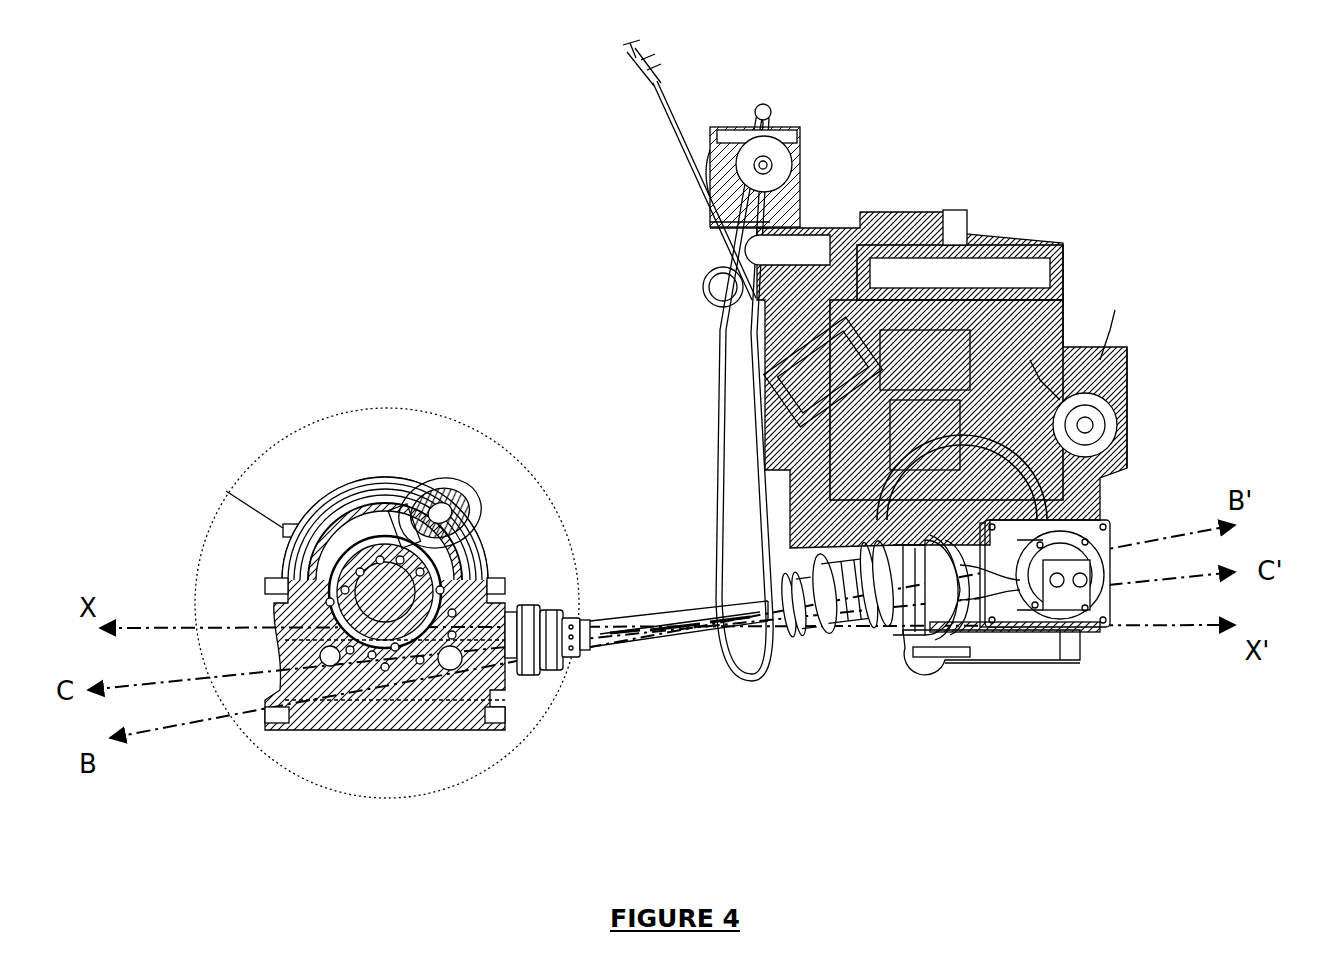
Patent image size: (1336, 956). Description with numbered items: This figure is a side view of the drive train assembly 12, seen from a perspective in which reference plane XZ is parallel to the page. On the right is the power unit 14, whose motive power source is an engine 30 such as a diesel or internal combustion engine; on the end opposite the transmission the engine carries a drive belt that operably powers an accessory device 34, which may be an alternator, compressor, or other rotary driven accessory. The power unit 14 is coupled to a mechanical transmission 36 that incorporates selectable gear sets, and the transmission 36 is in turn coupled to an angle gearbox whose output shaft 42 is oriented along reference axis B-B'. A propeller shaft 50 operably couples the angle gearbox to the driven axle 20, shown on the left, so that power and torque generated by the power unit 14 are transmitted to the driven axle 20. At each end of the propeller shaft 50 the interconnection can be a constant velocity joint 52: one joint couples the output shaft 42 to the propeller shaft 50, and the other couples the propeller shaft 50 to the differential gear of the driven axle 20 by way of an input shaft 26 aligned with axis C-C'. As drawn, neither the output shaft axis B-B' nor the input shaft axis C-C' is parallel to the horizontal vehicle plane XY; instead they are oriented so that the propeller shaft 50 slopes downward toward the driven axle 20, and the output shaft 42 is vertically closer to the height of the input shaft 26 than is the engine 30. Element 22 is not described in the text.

The drive train assembly 12 is at (1120, 350).
The power unit 14 is at (921, 188).
The driven axle 20 is at (383, 597).
The bearing assembly 22 is at (328, 462).
The input shaft 26 is at (503, 690).
The engine 30 is at (1030, 245).
The accessory device 34 is at (790, 170).
The mechanical transmission 36 is at (1085, 522).
The output shaft 42 is at (896, 655).
The propeller shaft 50 is at (682, 650).
The constant velocity joint 52 is at (558, 672).